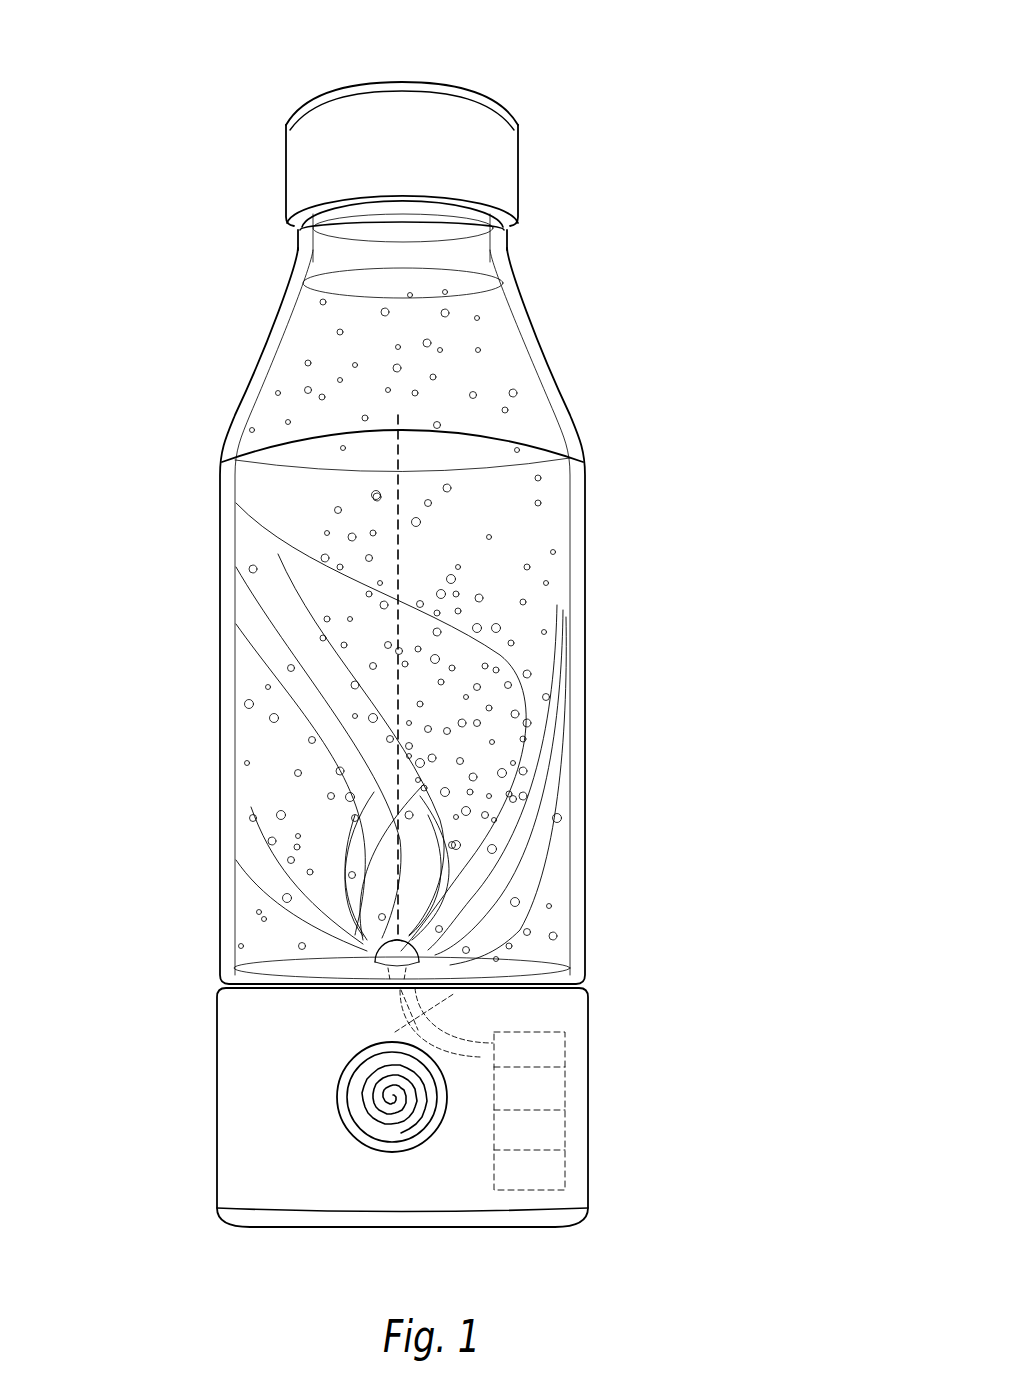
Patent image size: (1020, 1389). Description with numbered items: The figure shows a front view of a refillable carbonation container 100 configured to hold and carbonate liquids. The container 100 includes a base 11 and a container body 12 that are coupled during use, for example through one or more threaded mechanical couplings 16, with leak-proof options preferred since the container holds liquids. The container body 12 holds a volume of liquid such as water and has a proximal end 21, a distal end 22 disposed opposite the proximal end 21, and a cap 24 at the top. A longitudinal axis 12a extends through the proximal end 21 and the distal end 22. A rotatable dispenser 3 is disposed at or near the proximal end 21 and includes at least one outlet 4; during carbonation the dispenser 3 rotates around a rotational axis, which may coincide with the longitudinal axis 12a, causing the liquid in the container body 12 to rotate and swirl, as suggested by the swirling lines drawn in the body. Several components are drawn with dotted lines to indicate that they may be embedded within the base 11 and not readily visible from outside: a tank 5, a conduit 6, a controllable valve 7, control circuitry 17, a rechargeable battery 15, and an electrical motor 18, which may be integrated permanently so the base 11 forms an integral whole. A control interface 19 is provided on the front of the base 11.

The refillable carbonation container 100 is at (604, 69).
The cap 24 is at (539, 180).
The distal end 22 is at (186, 94).
The container body 12 is at (150, 985).
The longitudinal axis 12a is at (400, 545).
The proximal end 21 is at (185, 951).
The base 11 is at (150, 1228).
The outlet 4 is at (403, 948).
The dispenser 3 is at (424, 955).
The valve 7 is at (527, 965).
The mechanical couplings 16 is at (452, 995).
The conduit 6 is at (452, 1027).
The tank 5 is at (566, 1047).
The control circuitry 17 is at (566, 1085).
The rechargeable battery 15 is at (566, 1120).
The electrical motor 18 is at (566, 1155).
The control interface 19 is at (430, 1125).